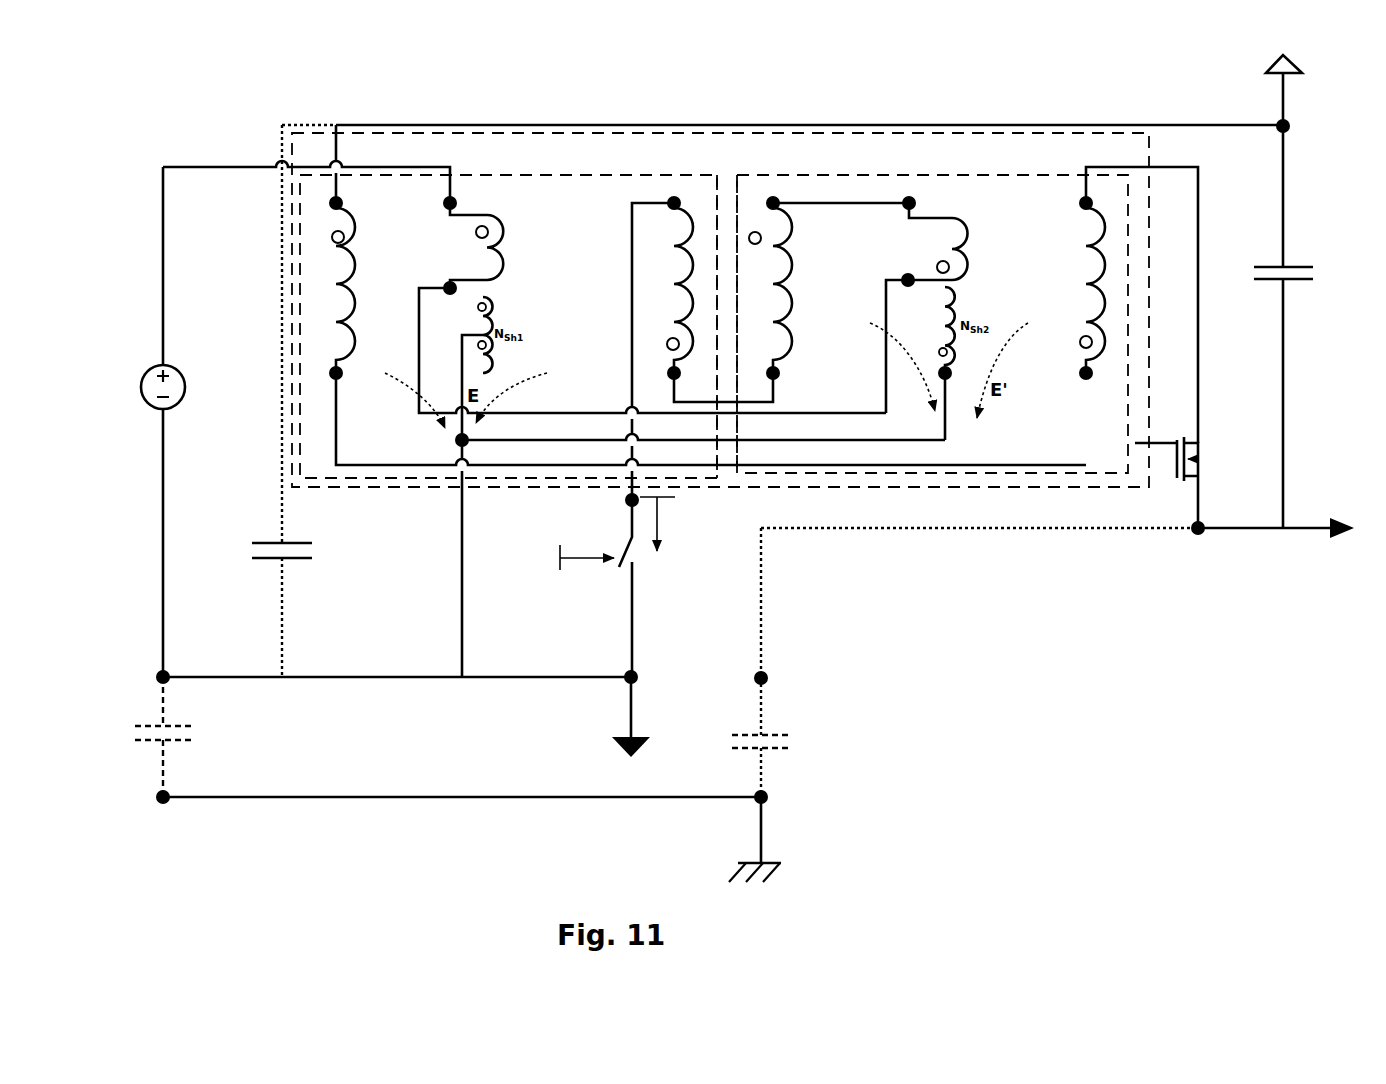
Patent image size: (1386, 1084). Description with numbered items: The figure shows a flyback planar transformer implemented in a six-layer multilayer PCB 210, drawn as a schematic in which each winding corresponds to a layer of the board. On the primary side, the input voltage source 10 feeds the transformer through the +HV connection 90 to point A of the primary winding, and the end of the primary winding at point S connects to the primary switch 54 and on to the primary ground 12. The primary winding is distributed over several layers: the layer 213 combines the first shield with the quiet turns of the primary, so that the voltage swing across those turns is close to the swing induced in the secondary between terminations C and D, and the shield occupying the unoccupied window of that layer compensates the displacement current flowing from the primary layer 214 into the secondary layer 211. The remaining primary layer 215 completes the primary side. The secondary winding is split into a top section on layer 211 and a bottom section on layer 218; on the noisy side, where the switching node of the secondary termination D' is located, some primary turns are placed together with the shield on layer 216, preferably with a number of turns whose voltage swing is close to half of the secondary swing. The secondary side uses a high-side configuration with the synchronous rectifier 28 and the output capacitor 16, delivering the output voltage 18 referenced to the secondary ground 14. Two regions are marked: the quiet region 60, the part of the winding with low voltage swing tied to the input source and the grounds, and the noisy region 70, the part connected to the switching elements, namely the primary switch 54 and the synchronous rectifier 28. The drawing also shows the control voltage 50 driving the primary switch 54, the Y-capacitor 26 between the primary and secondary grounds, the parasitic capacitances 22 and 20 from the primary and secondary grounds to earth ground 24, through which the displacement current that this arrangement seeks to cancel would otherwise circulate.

The input voltage source 10 is at (128, 358).
The primary ground 12 is at (647, 684).
The secondary ground 14 is at (1313, 125).
The output capacitor 16 is at (1313, 255).
The output voltage 18 is at (1272, 547).
The stray capacitance Cs 20 is at (788, 718).
The parasitic capacitance Cp 22 is at (207, 733).
The earth ground 24 is at (784, 872).
The Y-capacitor Cy 26 is at (325, 583).
The synchronous rectifier 28 is at (1196, 452).
The control voltage Vc 50 is at (584, 570).
The primary switch 54 is at (622, 580).
The quiet region 60 is at (323, 445).
The noisy region 70 is at (1128, 240).
The +HV connection 90 is at (237, 205).
The multilayer PCB 210 is at (1072, 488).
The secondary winding layer (top section) 211 is at (350, 215).
The first shield and quiet primary turns layer 213 is at (505, 215).
The primary winding layer 214 is at (690, 215).
The primary winding NP3 215 is at (790, 215).
The primary winding layer with shield 216 is at (973, 216).
The secondary winding layer (bottom section) 218 is at (1101, 215).